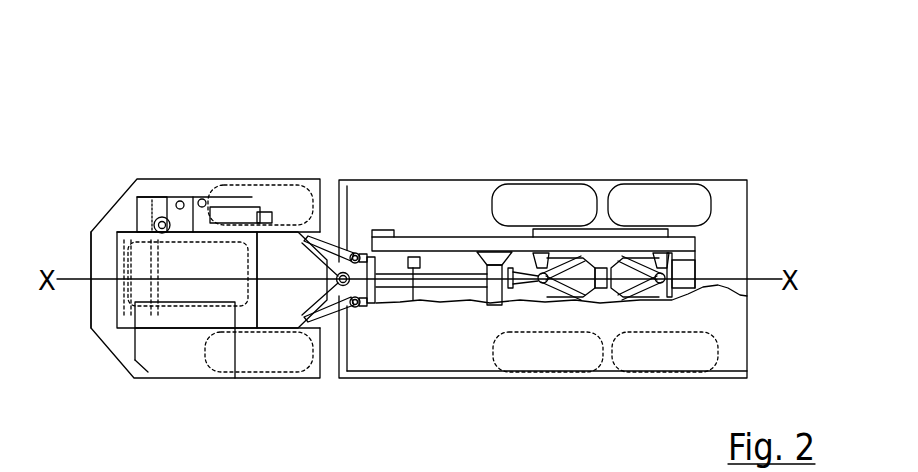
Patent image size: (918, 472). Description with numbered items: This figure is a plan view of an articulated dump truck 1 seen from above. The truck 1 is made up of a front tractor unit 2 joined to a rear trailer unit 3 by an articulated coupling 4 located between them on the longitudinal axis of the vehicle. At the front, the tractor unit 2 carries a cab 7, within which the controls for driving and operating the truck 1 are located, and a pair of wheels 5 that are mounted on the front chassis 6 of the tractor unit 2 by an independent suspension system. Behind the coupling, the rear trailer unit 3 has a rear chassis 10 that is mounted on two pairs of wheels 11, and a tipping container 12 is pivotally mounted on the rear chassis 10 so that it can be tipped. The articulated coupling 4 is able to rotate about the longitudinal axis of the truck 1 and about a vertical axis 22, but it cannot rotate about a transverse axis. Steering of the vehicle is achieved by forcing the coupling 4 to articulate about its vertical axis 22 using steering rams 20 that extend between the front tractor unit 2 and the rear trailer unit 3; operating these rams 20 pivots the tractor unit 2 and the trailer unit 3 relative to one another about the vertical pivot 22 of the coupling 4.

The articulated dump truck 1 is at (587, 113).
The front tractor unit 2 is at (190, 157).
The rear trailer unit 3 is at (612, 158).
The articulated coupling 4 is at (346, 272).
The wheels 5 is at (289, 184).
The front chassis 6 is at (90, 308).
The cab 7 is at (141, 360).
The rear chassis 10 is at (437, 237).
The wheels 11 is at (526, 192).
The tipping container 12 is at (428, 371).
The steering rams 20 is at (348, 254).
The vertical axis 22 is at (375, 260).